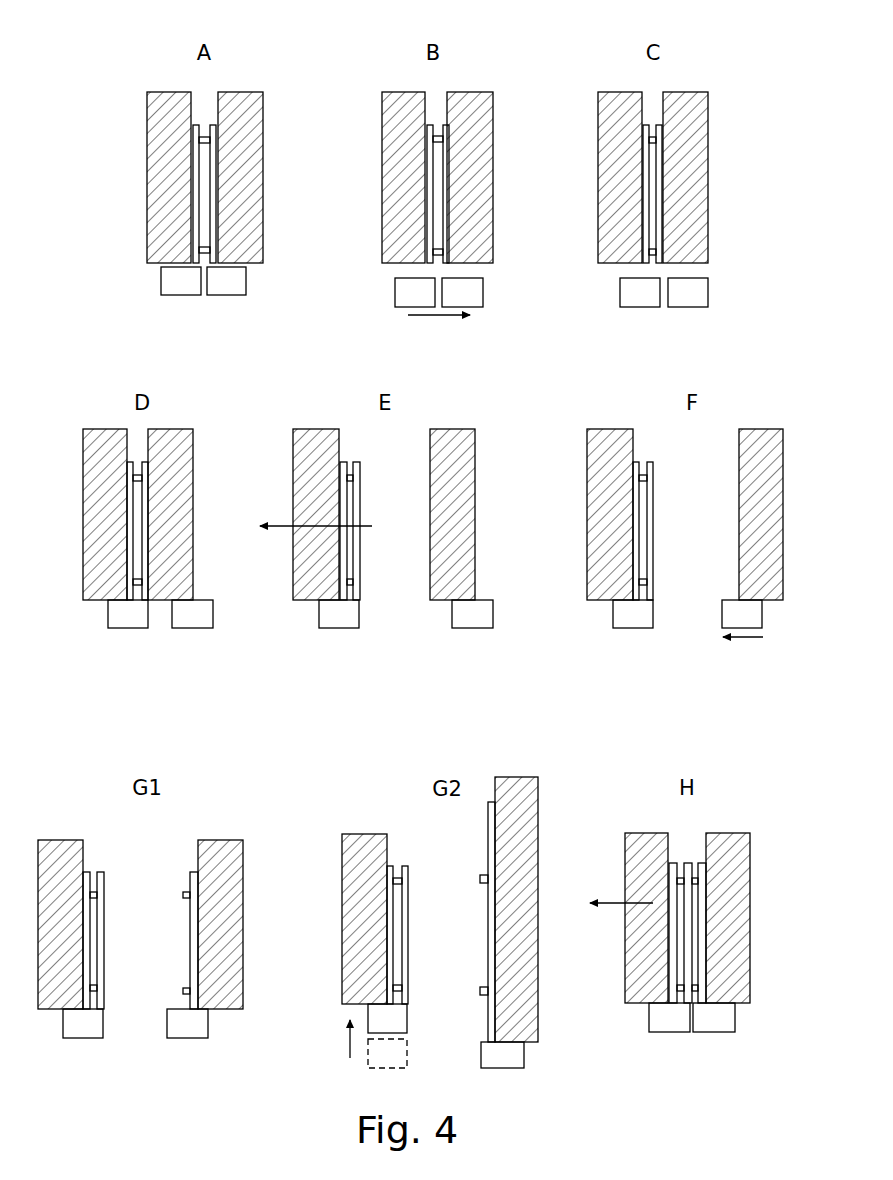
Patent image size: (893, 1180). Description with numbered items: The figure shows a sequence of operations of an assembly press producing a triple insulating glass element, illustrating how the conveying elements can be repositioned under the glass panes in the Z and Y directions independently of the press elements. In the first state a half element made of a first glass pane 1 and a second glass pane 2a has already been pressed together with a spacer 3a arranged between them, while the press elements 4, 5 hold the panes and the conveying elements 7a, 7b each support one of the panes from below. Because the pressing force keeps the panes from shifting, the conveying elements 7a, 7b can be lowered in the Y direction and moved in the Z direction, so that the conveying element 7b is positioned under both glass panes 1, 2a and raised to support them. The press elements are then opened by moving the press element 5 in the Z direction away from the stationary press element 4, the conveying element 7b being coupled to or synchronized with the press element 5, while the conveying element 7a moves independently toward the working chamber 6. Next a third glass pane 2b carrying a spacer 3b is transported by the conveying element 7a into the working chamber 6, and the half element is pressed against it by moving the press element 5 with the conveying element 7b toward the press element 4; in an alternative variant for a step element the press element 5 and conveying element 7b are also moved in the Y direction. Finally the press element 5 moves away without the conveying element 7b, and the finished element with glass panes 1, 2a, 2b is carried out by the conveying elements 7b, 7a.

The first glass pane 1 is at (194, 192).
The second glass pane 2a is at (214, 198).
The third glass pane 2b is at (193, 918).
The spacer 3a is at (205, 248).
The spacer 3b is at (186, 892).
The press element 4 is at (245, 163).
The press element 5 is at (168, 112).
The working chamber 6 is at (207, 102).
The conveying element 7a is at (222, 275).
The conveying element 7b is at (180, 290).